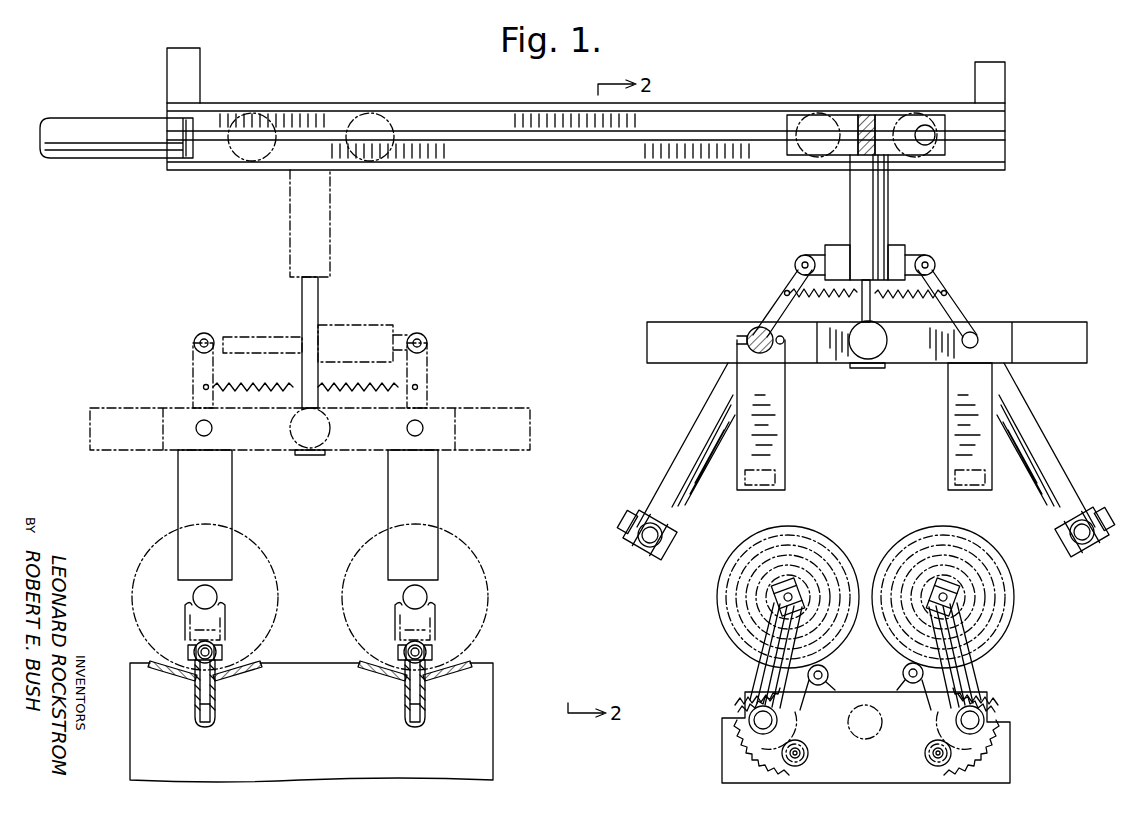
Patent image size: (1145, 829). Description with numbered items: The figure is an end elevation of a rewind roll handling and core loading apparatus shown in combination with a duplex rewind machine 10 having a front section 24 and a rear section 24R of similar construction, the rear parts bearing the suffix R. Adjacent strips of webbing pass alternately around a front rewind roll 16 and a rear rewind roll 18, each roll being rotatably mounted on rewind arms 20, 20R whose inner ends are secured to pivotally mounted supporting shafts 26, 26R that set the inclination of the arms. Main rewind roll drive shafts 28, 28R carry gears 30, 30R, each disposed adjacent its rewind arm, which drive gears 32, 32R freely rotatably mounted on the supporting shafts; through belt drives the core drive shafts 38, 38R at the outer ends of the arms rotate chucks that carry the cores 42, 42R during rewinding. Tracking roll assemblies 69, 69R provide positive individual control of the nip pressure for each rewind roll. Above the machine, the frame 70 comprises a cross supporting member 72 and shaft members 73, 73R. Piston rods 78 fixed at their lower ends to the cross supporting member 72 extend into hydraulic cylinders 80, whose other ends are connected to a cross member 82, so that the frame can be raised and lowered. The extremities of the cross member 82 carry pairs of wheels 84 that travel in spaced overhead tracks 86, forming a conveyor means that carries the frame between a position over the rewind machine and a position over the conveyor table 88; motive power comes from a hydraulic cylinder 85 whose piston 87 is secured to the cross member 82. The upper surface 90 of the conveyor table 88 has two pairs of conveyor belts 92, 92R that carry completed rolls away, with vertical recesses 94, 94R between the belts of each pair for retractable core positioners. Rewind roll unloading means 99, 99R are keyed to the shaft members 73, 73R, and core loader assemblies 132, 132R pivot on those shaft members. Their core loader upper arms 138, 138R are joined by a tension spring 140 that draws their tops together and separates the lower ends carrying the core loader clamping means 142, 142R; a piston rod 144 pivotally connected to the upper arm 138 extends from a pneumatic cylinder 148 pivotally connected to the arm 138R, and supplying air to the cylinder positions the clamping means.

The rewind machine 10 is at (1045, 738).
The front rewind roll 16 is at (150, 552).
The rear rewind roll 18 is at (470, 552).
The rewind arm 20 is at (760, 665).
The rear rewind arm 20R is at (975, 668).
The front section 24 is at (690, 647).
The rear section 24R is at (1036, 634).
The supporting shaft 26 is at (748, 722).
The rear supporting shaft 26R is at (985, 720).
The main rewind roll drive shaft 28 is at (805, 752).
The rear main rewind roll drive shaft 28R is at (948, 758).
The gear 30 is at (783, 758).
The rear gear 30R is at (925, 756).
The gear 32 is at (745, 697).
The rear gear 32R is at (990, 697).
The core drive shaft 38 is at (792, 592).
The rear core drive shaft 38R is at (948, 595).
The core 42 is at (215, 647).
The rear core 42R is at (405, 647).
The tracking roll assembly 69 is at (822, 682).
The rear tracking roll assembly 69R is at (908, 683).
The frame 70 is at (465, 392).
The cross supporting member 72 is at (498, 428).
The shaft member 73 is at (755, 330).
The rear shaft member 73R is at (972, 335).
The piston rod 78 is at (318, 295).
The hydraulic cylinder 80 is at (330, 205).
The cross member 82 is at (870, 115).
The wheels 84 is at (372, 112).
The hydraulic cylinder 85 is at (85, 125).
The overhead tracks 86 is at (540, 160).
The piston 87 is at (635, 137).
The conveyor table 88 is at (311, 722).
The upper surface 90 is at (312, 660).
The conveyor belts 92 is at (168, 680).
The rear conveyor belts 92R is at (378, 680).
The vertical recess 94 is at (205, 717).
The rear vertical recess 94R is at (415, 717).
The rewind roll unloading means 99 is at (232, 478).
The rear rewind roll unloading means 99R is at (388, 478).
The core loader assembly 132 is at (692, 388).
The rear core loader assembly 132R is at (1038, 418).
The core loader upper arm 138 is at (193, 367).
The rear core loader upper arm 138R is at (425, 365).
The tension spring 140 is at (370, 395).
The core loader clamping means 142 is at (155, 645).
The rear core loader clamping means 142R is at (466, 643).
The piston rod 144 is at (270, 330).
The pneumatic cylinder 148 is at (375, 330).